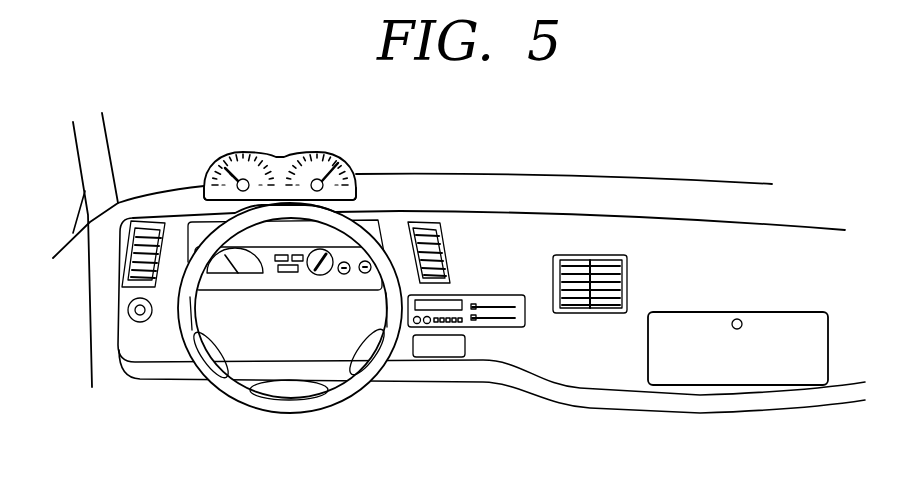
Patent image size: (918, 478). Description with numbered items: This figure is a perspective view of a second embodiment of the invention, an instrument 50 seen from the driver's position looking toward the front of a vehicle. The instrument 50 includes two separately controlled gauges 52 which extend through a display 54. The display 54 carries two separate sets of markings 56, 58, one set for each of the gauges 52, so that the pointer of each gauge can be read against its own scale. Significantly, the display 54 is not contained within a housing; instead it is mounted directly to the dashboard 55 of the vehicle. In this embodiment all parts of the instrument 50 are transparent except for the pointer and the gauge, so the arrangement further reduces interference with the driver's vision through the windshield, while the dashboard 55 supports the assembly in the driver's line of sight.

The instrument 50 is at (301, 127).
The gauges 52 is at (204, 186).
The display 54 is at (282, 152).
The dashboard 55 is at (517, 202).
The markings 56 is at (254, 151).
The markings 58 is at (304, 150).